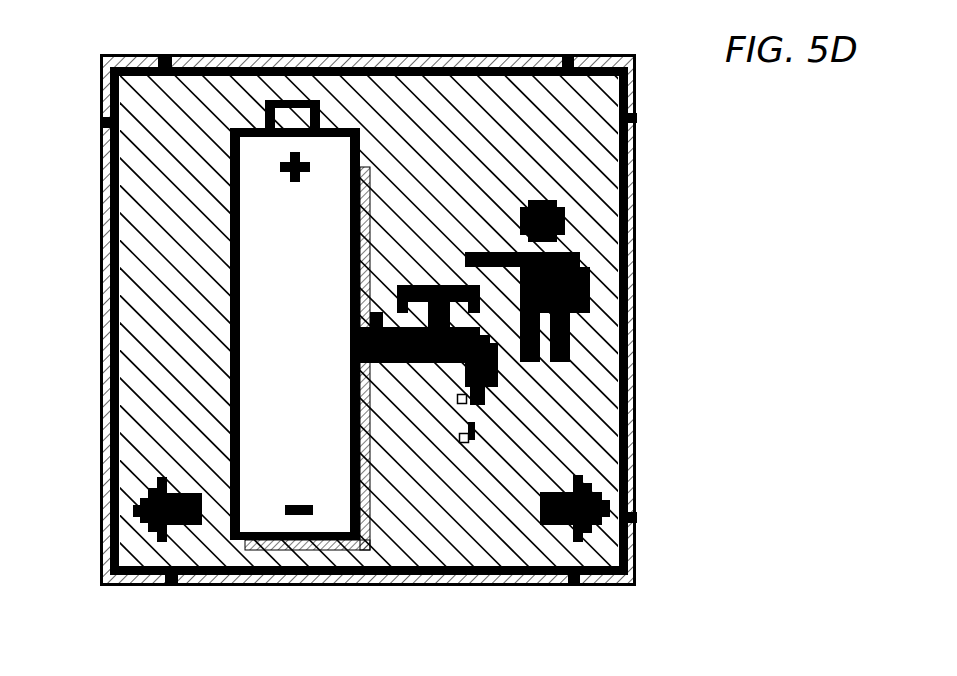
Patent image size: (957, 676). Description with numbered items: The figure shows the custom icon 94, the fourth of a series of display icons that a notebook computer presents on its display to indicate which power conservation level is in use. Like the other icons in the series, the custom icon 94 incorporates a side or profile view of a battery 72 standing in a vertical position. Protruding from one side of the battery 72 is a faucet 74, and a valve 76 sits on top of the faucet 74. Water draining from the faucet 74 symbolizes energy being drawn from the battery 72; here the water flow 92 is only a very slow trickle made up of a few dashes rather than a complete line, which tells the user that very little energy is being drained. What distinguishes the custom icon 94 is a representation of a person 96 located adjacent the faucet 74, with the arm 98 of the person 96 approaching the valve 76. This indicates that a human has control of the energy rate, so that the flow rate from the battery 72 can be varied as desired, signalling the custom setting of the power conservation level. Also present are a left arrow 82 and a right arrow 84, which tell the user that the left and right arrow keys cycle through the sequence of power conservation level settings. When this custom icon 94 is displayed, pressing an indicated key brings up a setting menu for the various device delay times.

The battery 72 is at (230, 320).
The faucet 74 is at (417, 363).
The valve 76 is at (420, 285).
The left arrow 82 is at (190, 528).
The right arrow 84 is at (555, 527).
The water flow 92 is at (476, 431).
The custom icon 94 is at (99, 285).
The person 96 is at (583, 253).
The arm 98 is at (480, 252).